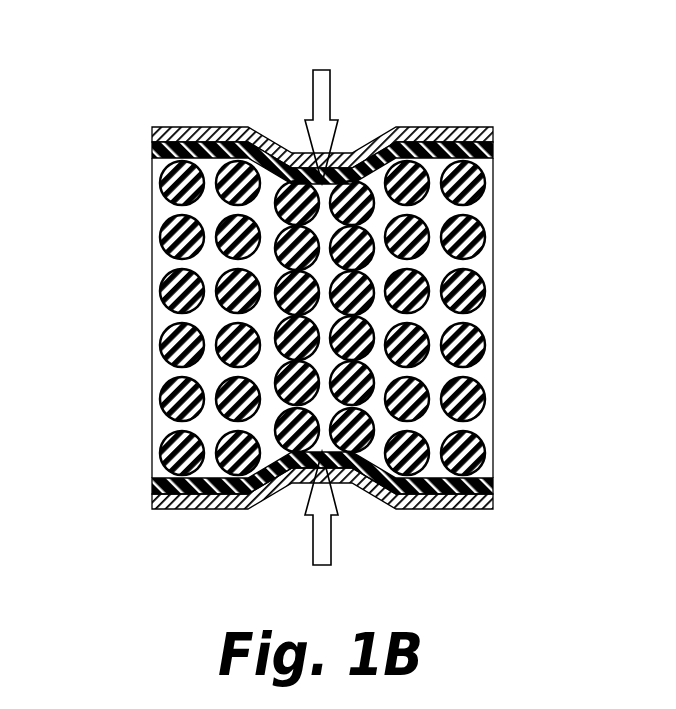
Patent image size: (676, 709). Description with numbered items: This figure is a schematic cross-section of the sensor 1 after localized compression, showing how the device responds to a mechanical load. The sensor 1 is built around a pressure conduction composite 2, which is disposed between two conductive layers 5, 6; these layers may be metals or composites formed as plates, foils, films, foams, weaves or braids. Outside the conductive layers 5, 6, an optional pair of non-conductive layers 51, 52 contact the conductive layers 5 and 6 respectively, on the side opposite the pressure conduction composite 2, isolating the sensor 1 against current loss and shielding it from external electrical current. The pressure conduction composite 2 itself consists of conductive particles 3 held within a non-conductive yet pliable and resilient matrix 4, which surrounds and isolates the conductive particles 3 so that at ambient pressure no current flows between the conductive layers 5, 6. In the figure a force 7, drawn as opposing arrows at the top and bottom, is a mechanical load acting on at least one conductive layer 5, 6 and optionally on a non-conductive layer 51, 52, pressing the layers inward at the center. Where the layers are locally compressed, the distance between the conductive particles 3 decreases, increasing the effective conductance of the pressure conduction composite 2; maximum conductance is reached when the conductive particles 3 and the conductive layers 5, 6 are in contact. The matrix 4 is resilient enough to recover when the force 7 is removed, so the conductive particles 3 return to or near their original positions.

The sensor 1 is at (305, 311).
The pressure conduction composite 2 is at (326, 318).
The conductive particles 3 is at (161, 390).
The matrix 4 is at (163, 265).
The conductive layer 5 is at (497, 150).
The conductive layer 6 is at (497, 488).
The force 7 is at (307, 85).
The non-conductive layer 51 is at (443, 120).
The non-conductive layer 52 is at (152, 497).